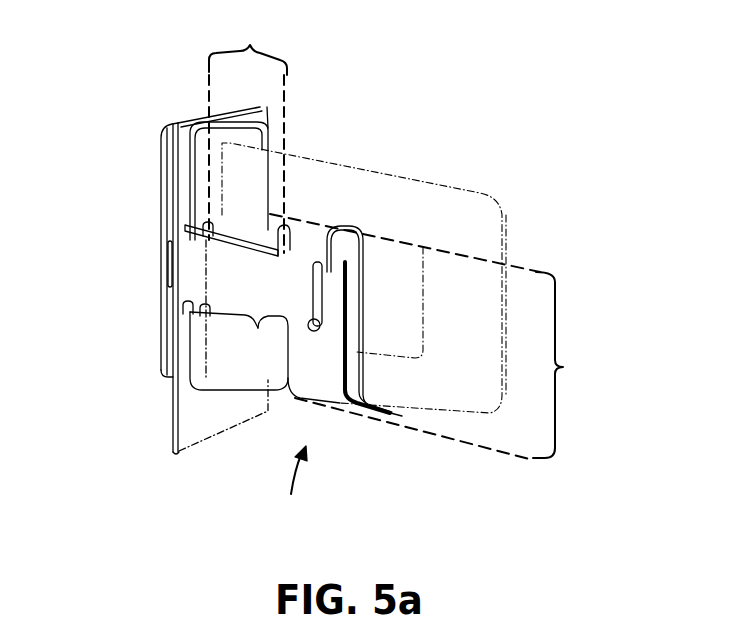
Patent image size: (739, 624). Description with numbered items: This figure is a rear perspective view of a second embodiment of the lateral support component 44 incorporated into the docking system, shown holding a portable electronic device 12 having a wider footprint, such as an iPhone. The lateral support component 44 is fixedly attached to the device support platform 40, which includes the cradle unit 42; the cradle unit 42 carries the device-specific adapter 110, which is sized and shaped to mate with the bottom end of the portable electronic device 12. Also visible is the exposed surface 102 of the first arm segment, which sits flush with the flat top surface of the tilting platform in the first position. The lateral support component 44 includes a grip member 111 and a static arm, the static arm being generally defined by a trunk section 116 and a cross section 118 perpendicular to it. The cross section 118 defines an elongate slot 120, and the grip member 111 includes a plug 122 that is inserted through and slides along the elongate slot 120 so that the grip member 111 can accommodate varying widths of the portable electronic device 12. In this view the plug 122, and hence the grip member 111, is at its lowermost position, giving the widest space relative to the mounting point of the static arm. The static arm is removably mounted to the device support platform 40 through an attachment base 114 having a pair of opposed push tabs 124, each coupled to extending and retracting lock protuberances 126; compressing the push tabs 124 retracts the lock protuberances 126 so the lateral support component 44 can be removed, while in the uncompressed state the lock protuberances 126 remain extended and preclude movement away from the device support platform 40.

The portable electronic device 12 is at (447, 203).
The device support platform 40 is at (182, 311).
The exposed surface 102 is at (183, 417).
The cradle unit 42 is at (216, 375).
The lateral support component 44 is at (291, 484).
The device-specific adapter 110 is at (212, 360).
The grip member 111 is at (376, 408).
The attachment base 114 is at (195, 285).
The trunk section 116 is at (248, 137).
The cross section 118 is at (439, 337).
The elongate slot 120 is at (315, 262).
The plug 122 is at (313, 324).
The push tabs 124 is at (200, 226).
The lock protuberances 126 is at (168, 243).